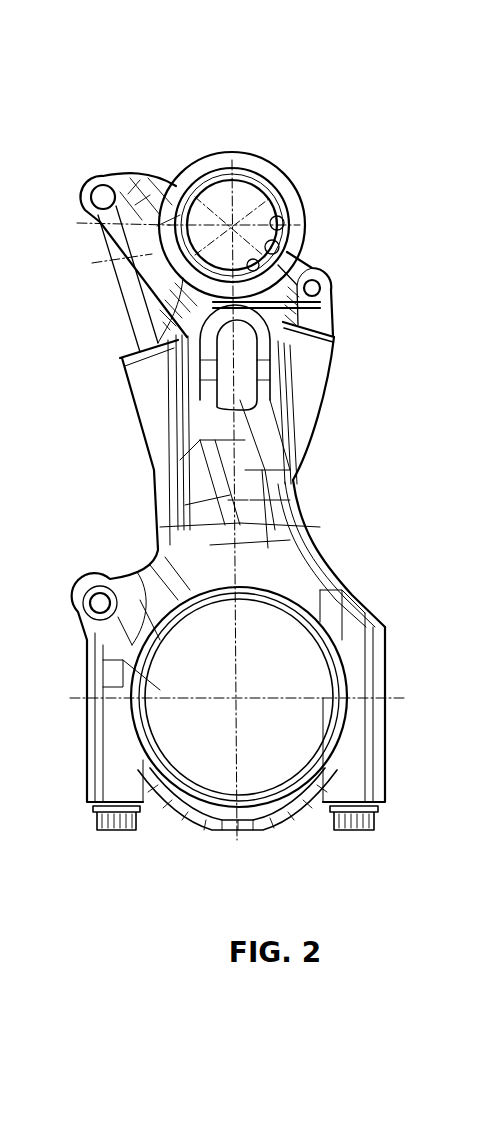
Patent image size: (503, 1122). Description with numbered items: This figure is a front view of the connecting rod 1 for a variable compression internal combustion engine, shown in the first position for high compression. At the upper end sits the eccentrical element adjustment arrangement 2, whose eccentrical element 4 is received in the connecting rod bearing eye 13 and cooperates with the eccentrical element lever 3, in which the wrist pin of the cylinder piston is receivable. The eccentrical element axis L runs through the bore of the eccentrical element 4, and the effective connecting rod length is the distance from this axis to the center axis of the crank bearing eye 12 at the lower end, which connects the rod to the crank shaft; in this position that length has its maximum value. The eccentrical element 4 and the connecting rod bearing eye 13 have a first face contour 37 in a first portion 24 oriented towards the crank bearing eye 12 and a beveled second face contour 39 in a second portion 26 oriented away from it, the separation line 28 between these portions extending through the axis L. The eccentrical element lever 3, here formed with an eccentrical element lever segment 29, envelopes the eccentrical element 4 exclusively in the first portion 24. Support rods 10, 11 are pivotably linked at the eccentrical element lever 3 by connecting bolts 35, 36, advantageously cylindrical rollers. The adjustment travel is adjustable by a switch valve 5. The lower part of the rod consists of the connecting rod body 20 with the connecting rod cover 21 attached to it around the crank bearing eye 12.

The connecting rod 1 is at (409, 167).
The eccentrical element adjustment arrangement 2 is at (324, 141).
The eccentrical element lever 3 is at (110, 171).
The eccentrical element 4 is at (243, 161).
The switch valve 5 is at (77, 603).
The support rod 10 is at (140, 313).
The support rod 11 is at (322, 317).
The crank bearing eye 12 is at (285, 777).
The connecting rod bearing eye 13 is at (236, 184).
The connecting rod body 20 is at (361, 647).
The connecting rod cover 21 is at (361, 760).
The first portion 24 is at (173, 263).
The second portion 26 is at (302, 192).
The separation line 28 is at (107, 234).
The eccentrical element lever segment 29 is at (135, 178).
The connecting bolt 35 is at (91, 193).
The connecting bolt 36 is at (331, 283).
The first face contour 37 is at (173, 333).
The second face contour 39 is at (262, 172).
The eccentrical element axis L is at (110, 269).